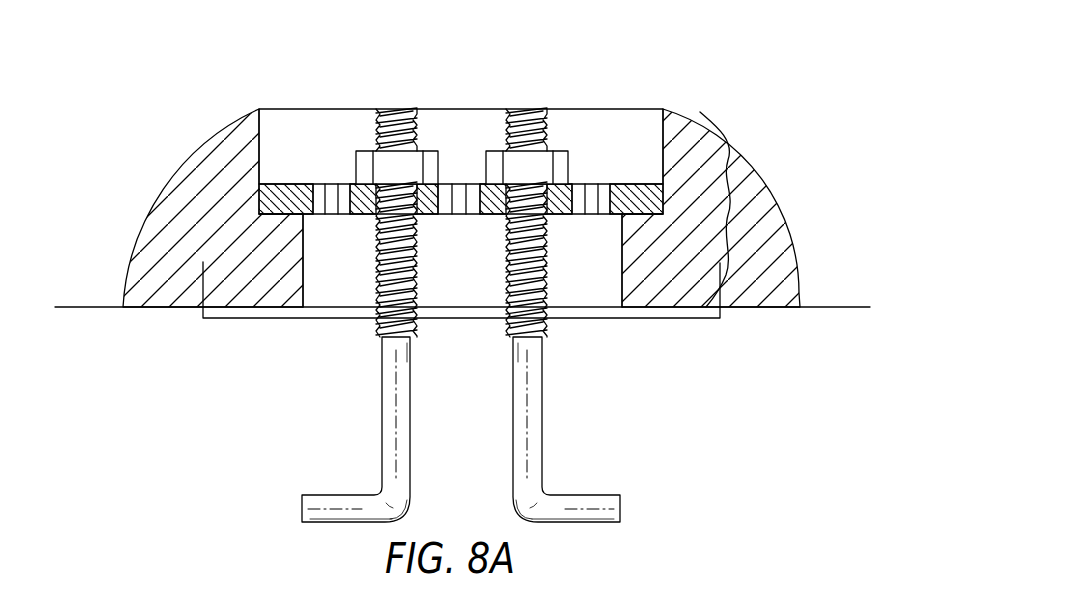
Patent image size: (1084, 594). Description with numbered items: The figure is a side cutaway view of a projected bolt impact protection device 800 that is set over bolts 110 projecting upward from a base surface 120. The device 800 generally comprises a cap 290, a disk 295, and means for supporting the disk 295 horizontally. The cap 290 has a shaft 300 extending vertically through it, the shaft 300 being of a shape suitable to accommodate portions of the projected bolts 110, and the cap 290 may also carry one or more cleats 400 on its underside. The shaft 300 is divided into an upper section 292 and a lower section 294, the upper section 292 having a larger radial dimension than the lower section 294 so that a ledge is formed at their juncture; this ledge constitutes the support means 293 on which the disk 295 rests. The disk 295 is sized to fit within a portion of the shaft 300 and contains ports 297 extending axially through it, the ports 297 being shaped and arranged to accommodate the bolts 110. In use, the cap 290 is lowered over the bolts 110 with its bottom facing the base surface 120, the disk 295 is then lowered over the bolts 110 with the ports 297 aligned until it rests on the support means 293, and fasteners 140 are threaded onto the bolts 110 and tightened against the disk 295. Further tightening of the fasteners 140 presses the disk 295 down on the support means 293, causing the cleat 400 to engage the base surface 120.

The projected bolt impact protection device 800 is at (680, 52).
The projected bolts 110 is at (380, 424).
The base surface 120 is at (92, 306).
The fasteners 140 is at (355, 155).
The cap 290 is at (206, 137).
The upper section of the shaft 292 is at (342, 125).
The support means 293 is at (278, 220).
The lower section of the shaft 294 is at (567, 290).
The disk 295 is at (432, 217).
The ports 297 is at (468, 188).
The shaft 300 is at (762, 182).
The cleat 400 is at (243, 318).